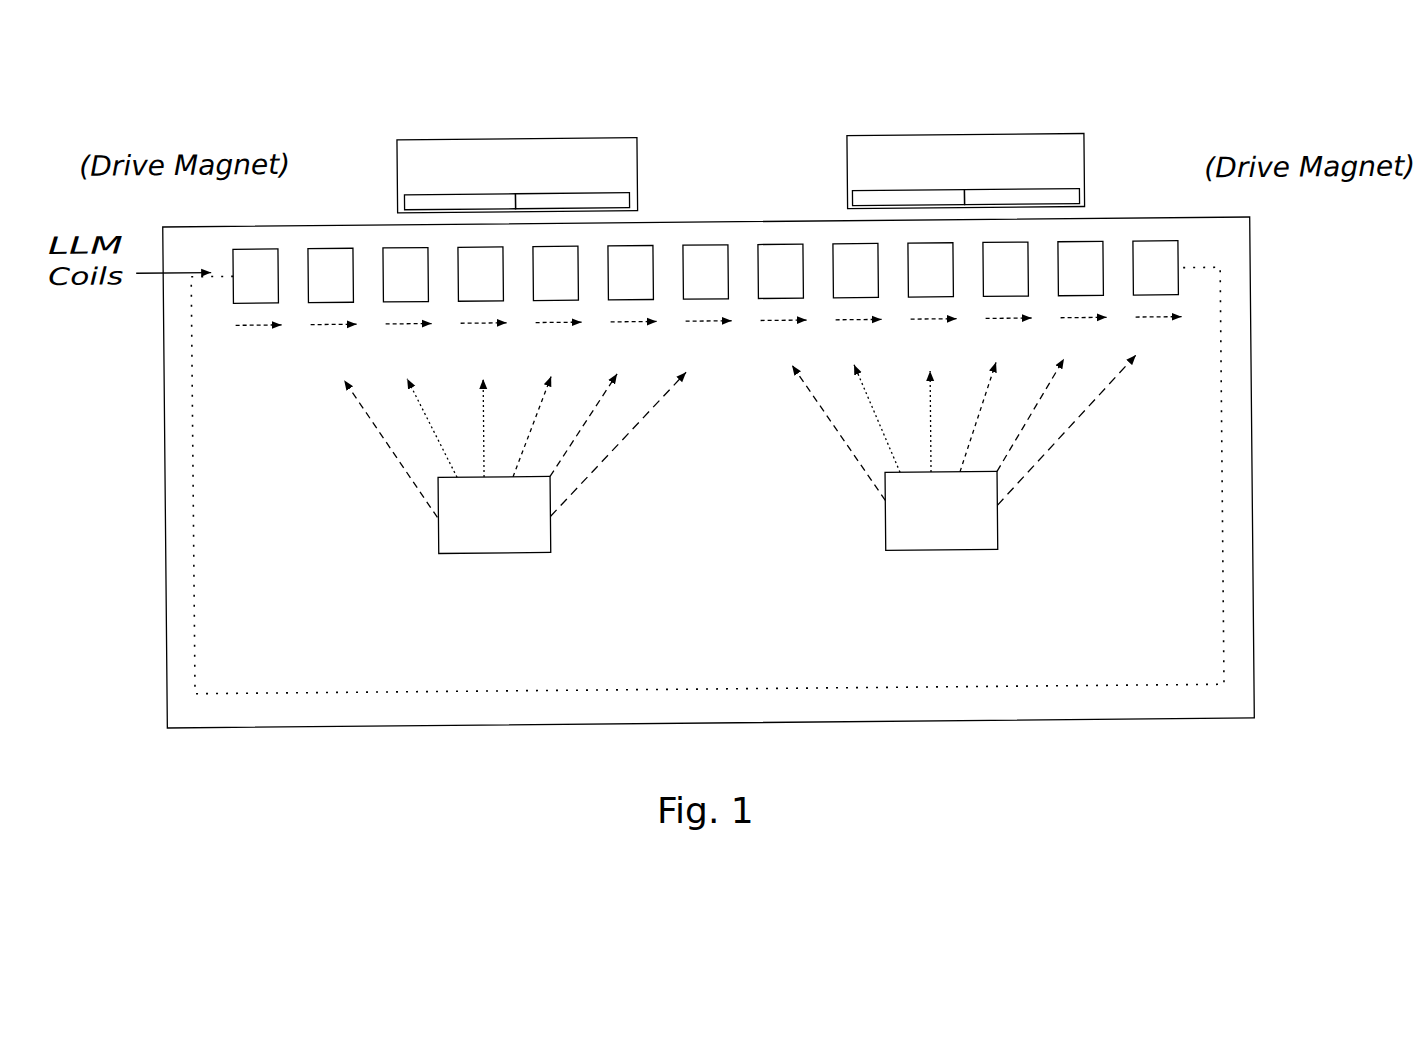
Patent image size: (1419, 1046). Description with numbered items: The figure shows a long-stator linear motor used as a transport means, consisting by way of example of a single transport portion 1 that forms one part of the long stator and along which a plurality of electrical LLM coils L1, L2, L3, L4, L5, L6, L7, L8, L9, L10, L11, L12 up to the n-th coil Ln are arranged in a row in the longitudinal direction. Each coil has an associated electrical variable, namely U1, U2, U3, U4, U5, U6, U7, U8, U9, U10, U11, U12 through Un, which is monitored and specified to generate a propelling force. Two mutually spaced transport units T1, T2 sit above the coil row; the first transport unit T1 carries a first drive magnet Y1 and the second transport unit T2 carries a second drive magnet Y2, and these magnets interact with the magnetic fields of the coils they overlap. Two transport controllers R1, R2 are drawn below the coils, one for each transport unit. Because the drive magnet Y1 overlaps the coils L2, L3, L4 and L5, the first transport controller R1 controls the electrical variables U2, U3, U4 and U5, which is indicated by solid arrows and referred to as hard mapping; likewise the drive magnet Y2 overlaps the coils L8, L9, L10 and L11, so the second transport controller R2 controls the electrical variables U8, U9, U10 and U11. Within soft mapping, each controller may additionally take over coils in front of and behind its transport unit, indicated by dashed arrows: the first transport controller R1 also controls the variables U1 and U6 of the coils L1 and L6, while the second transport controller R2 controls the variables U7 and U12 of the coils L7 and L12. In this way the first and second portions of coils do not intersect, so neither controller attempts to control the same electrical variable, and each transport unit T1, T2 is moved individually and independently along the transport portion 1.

The transport portion 1 is at (1204, 737).
The first transport unit T1 is at (400, 157).
The second transport unit T2 is at (1087, 153).
The first drive magnet Y1 is at (407, 203).
The second drive magnet Y2 is at (1082, 193).
The first transport controller R1 is at (516, 496).
The second transport controller R2 is at (965, 484).
The n-th LLM coil Ln is at (255, 276).
The first LLM coil L1 is at (330, 275).
The second LLM coil L2 is at (405, 275).
The third LLM coil L3 is at (480, 274).
The fourth LLM coil L4 is at (555, 273).
The fifth LLM coil L5 is at (630, 272).
The sixth LLM coil L6 is at (705, 272).
The seventh LLM coil L7 is at (780, 271).
The eighth LLM coil L8 is at (855, 270).
The ninth LLM coil L9 is at (930, 270).
The tenth LLM coil L10 is at (1005, 269).
The eleventh LLM coil L11 is at (1080, 268).
The twelfth LLM coil L12 is at (1155, 268).
The n-th electrical variable Un is at (259, 346).
The first electrical variable U1 is at (334, 345).
The second electrical variable U2 is at (409, 345).
The third electrical variable U3 is at (484, 344).
The fourth electrical variable U4 is at (559, 343).
The fifth electrical variable U5 is at (634, 342).
The sixth electrical variable U6 is at (709, 342).
The seventh electrical variable U7 is at (784, 341).
The eighth electrical variable U8 is at (859, 340).
The ninth electrical variable U9 is at (934, 340).
The tenth electrical variable U10 is at (1009, 339).
The eleventh electrical variable U11 is at (1084, 338).
The twelfth electrical variable U12 is at (1159, 338).